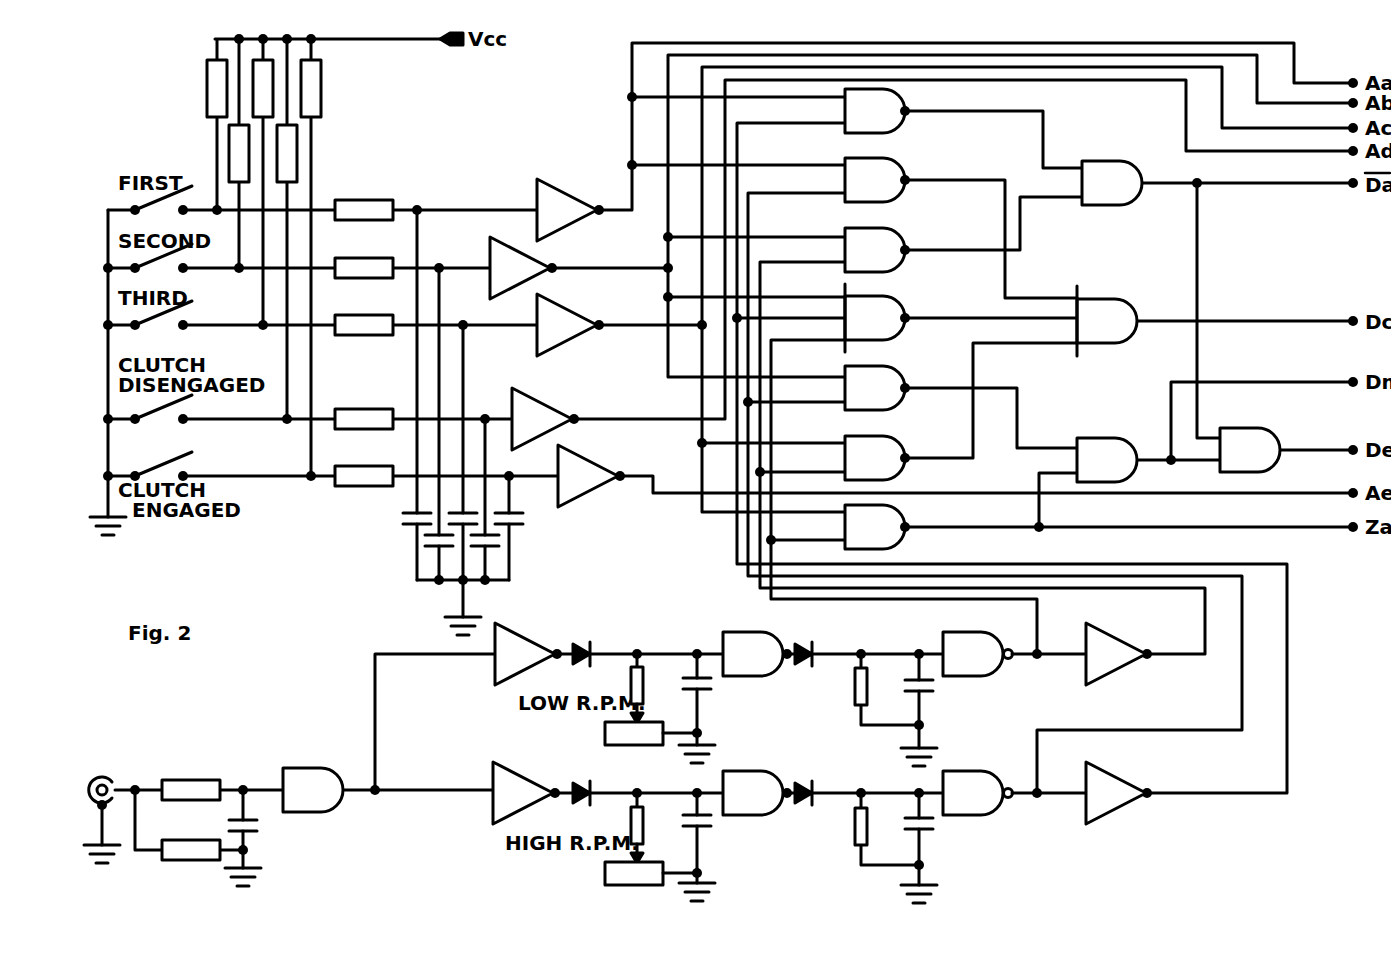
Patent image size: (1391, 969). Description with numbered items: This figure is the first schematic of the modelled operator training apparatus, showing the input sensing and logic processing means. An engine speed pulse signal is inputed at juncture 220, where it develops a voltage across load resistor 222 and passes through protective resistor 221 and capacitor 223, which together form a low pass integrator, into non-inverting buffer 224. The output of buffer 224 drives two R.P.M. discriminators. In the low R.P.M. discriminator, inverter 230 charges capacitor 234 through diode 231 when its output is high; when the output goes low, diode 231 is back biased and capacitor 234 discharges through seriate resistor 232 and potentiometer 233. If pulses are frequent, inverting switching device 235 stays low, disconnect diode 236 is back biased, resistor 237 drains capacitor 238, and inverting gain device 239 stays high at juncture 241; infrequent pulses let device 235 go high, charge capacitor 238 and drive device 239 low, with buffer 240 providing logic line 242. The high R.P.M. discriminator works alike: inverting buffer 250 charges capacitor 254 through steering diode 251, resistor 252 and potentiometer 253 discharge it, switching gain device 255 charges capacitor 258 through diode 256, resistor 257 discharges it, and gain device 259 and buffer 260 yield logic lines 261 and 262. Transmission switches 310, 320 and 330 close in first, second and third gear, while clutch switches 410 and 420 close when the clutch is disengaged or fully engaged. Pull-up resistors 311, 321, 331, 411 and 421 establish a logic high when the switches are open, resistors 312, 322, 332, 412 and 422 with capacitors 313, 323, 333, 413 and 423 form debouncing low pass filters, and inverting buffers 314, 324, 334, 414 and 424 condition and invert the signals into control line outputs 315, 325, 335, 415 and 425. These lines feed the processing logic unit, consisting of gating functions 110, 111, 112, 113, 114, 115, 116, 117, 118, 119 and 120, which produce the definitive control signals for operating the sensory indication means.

The gating function 110 is at (906, 103).
The gating function 111 is at (906, 178).
The gating function 112 is at (906, 247).
The gating function 113 is at (906, 312).
The gating function 114 is at (906, 382).
The gating function 115 is at (906, 452).
The gating function 116 is at (906, 516).
The gating function 117 is at (1135, 160).
The gating function 118 is at (1137, 298).
The gating function 119 is at (1114, 437).
The gating function 120 is at (1267, 428).
The switch 310 is at (108, 203).
The switch 320 is at (108, 262).
The switch 330 is at (108, 320).
The switch 410 is at (108, 412).
The switch 420 is at (108, 470).
The pull-up resistor 311 is at (206, 96).
The pull-up resistor 321 is at (229, 160).
The pull-up resistor 331 is at (254, 68).
The pull-up resistor 411 is at (298, 160).
The pull-up resistor 421 is at (320, 104).
The resistor 312 is at (390, 190).
The resistor 322 is at (390, 250).
The resistor 332 is at (390, 308).
The resistor 412 is at (378, 409).
The resistor 422 is at (380, 466).
The capacitor 313 is at (410, 522).
The capacitor 323 is at (432, 547).
The capacitor 333 is at (460, 588).
The capacitor 413 is at (495, 553).
The capacitor 423 is at (516, 521).
The inverting buffer 314 is at (563, 192).
The inverting buffer 324 is at (488, 264).
The inverting buffer 334 is at (588, 318).
The inverting buffer 414 is at (568, 412).
The inverting buffer 424 is at (616, 470).
The control line output 315 is at (630, 141).
The control line output 325 is at (611, 260).
The control line output 335 is at (613, 328).
The control line output 415 is at (670, 412).
The control line output 425 is at (656, 494).
The juncture 220 is at (97, 776).
The protective resistor 221 is at (203, 780).
The load resistor 222 is at (177, 860).
The capacitor 223 is at (257, 830).
The non-inverting buffer 224 is at (317, 765).
The inverter 230 is at (521, 634).
The diode 231 is at (584, 642).
The resistor 232 is at (628, 690).
The potentiometer 233 is at (603, 733).
The capacitor 234 is at (703, 693).
The inverting switching device 235 is at (719, 636).
The disconnect diode 236 is at (818, 645).
The resistor 237 is at (852, 695).
The capacitor 238 is at (922, 695).
The inverting gain device 239 is at (993, 640).
The buffer 240 is at (1128, 642).
The juncture 241 is at (1031, 672).
The logic line 242 is at (1208, 660).
The inverting buffer 250 is at (539, 765).
The steering diode 251 is at (592, 784).
The resistor 252 is at (628, 830).
The potentiometer 253 is at (603, 880).
The capacitor 254 is at (703, 835).
The switching gain device 255 is at (751, 770).
The diode 256 is at (820, 782).
The resistor 257 is at (852, 832).
The capacitor 258 is at (924, 838).
The gain device 259 is at (984, 772).
The buffer 260 is at (1139, 780).
The logic line 261 is at (1175, 728).
The logic line 262 is at (1254, 799).